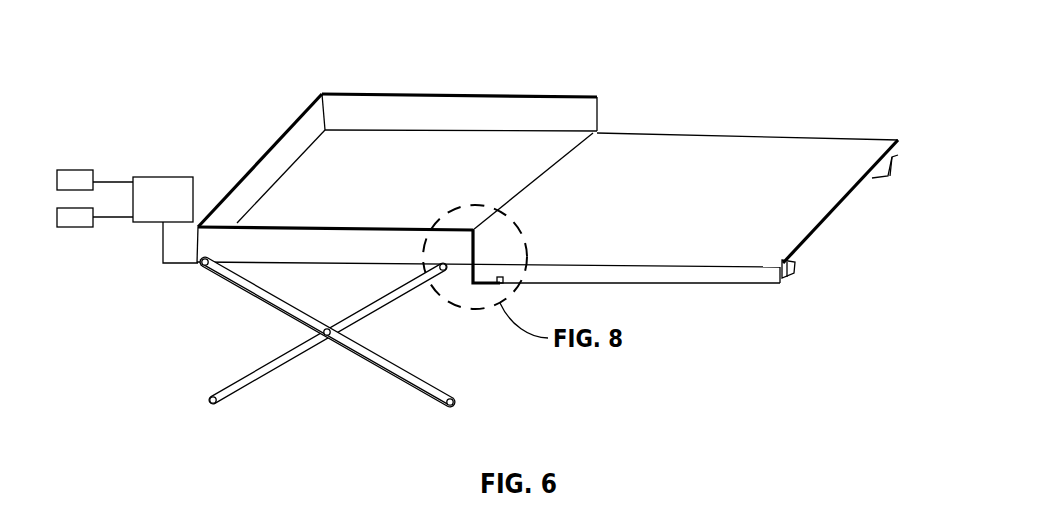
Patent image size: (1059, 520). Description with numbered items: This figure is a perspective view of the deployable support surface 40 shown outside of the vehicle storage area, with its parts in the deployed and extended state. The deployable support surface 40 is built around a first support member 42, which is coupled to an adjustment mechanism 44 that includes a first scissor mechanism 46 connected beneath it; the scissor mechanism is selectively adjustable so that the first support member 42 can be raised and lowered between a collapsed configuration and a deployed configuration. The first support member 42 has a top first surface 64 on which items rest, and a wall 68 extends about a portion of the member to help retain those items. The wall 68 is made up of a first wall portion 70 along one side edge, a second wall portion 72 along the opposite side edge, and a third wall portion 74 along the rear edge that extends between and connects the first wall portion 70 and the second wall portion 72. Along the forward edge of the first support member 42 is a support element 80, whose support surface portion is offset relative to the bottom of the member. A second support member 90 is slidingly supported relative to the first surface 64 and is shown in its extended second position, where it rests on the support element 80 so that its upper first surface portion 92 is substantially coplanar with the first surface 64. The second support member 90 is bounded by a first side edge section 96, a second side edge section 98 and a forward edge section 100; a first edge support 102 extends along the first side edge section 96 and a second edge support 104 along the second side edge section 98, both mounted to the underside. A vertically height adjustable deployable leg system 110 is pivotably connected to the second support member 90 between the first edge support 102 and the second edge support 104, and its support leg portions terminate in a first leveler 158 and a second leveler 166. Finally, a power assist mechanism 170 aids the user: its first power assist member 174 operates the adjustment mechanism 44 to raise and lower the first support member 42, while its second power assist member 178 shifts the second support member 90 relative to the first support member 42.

The deployable support surface 40 is at (397, 159).
The first support member 42 is at (308, 177).
The adjustment mechanism 44 is at (322, 347).
The first scissor mechanism 46 is at (258, 370).
The first surface 64 is at (370, 143).
The wall 68 is at (388, 87).
The first wall portion 70 is at (454, 75).
The second wall portion 72 is at (350, 244).
The third wall portion 74 is at (238, 190).
The support element 80 is at (490, 288).
The second support member 90 is at (585, 209).
The first surface portion 92 is at (783, 177).
The first side edge section 96 is at (710, 137).
The second side edge section 98 is at (700, 268).
The forward edge section 100 is at (827, 225).
The first edge support 102 is at (900, 148).
The second edge support 104 is at (763, 274).
The vertically height adjustable deployable leg system 110 is at (872, 190).
The first leveler 158 is at (795, 270).
The second leveler 166 is at (892, 158).
The power assist mechanism 170 is at (178, 177).
The first power assist member 174 is at (72, 170).
The second power assist member 178 is at (73, 229).